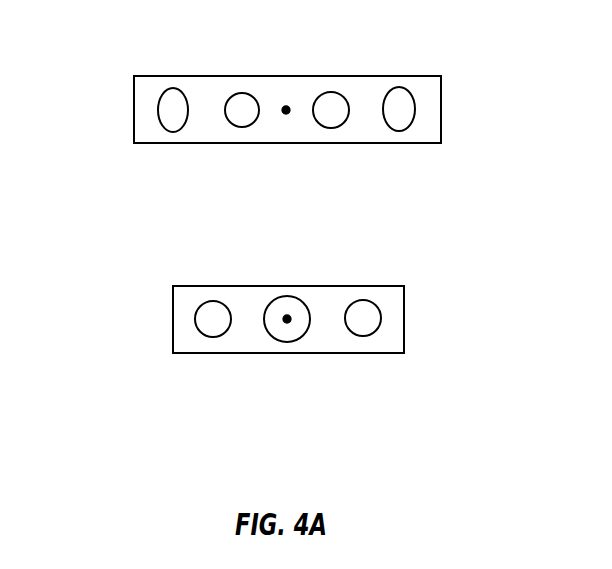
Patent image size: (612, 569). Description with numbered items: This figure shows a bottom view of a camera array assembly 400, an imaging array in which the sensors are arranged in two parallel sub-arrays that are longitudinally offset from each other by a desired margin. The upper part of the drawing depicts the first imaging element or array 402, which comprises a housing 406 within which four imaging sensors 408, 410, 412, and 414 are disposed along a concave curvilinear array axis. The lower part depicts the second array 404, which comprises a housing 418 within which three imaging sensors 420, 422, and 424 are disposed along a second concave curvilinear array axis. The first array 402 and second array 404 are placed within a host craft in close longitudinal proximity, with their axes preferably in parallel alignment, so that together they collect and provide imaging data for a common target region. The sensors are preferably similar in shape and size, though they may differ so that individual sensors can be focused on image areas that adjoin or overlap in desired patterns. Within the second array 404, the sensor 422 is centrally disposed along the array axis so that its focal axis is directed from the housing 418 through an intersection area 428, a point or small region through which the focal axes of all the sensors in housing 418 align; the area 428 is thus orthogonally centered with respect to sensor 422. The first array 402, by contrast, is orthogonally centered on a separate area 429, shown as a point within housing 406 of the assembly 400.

The camera array assembly 400 is at (386, 405).
The first imaging element or array 402 is at (140, 112).
The second array 404 is at (180, 310).
The housing 406 is at (226, 76).
The imaging sensor 408 is at (172, 88).
The imaging sensor 410 is at (241, 128).
The imaging sensor 412 is at (331, 128).
The imaging sensor 414 is at (399, 87).
The housing 418 is at (405, 315).
The imaging sensor 420 is at (213, 301).
The imaging sensor 422 is at (287, 344).
The imaging sensor 424 is at (363, 300).
The intersection area 428 is at (287, 315).
The area 429 is at (286, 114).